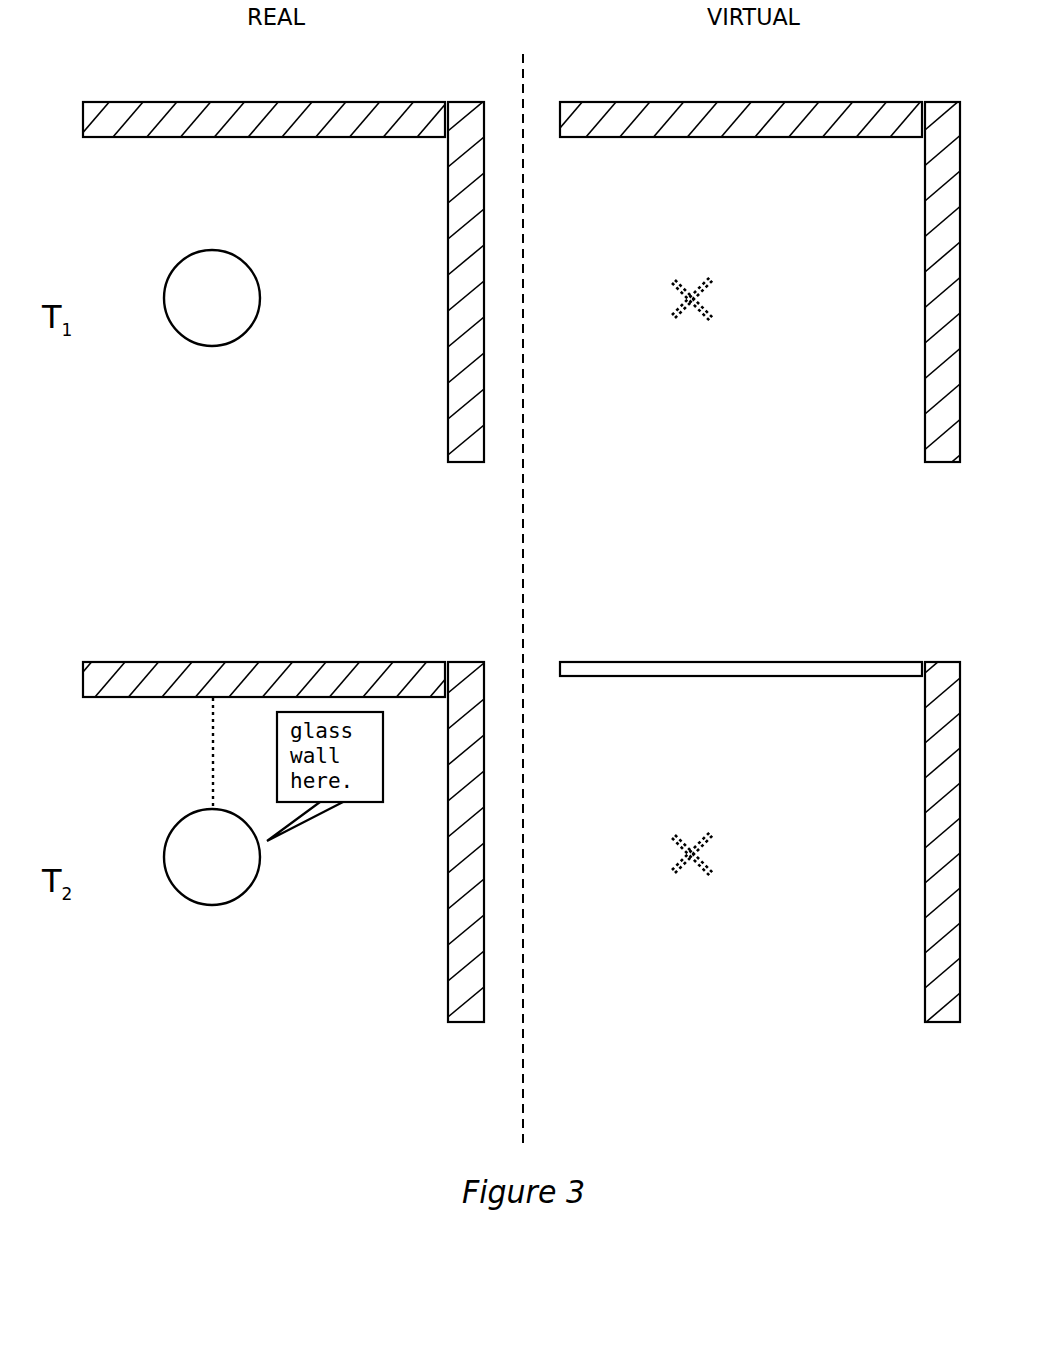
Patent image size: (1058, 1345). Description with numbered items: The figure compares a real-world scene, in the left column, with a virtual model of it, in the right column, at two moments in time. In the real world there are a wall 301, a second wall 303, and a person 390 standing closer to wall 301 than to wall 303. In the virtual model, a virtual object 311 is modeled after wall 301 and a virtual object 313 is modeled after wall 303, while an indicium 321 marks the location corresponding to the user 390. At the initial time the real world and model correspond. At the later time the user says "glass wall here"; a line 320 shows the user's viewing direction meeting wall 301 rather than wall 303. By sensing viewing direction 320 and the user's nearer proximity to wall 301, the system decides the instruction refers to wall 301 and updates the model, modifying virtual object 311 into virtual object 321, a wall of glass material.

The wall 301 is at (130, 138).
The wall 303 is at (448, 420).
The person 390 is at (184, 352).
The virtual object 311 is at (608, 138).
The virtual object 313 is at (925, 420).
The line 320 is at (210, 788).
The indicium 321 is at (682, 322).